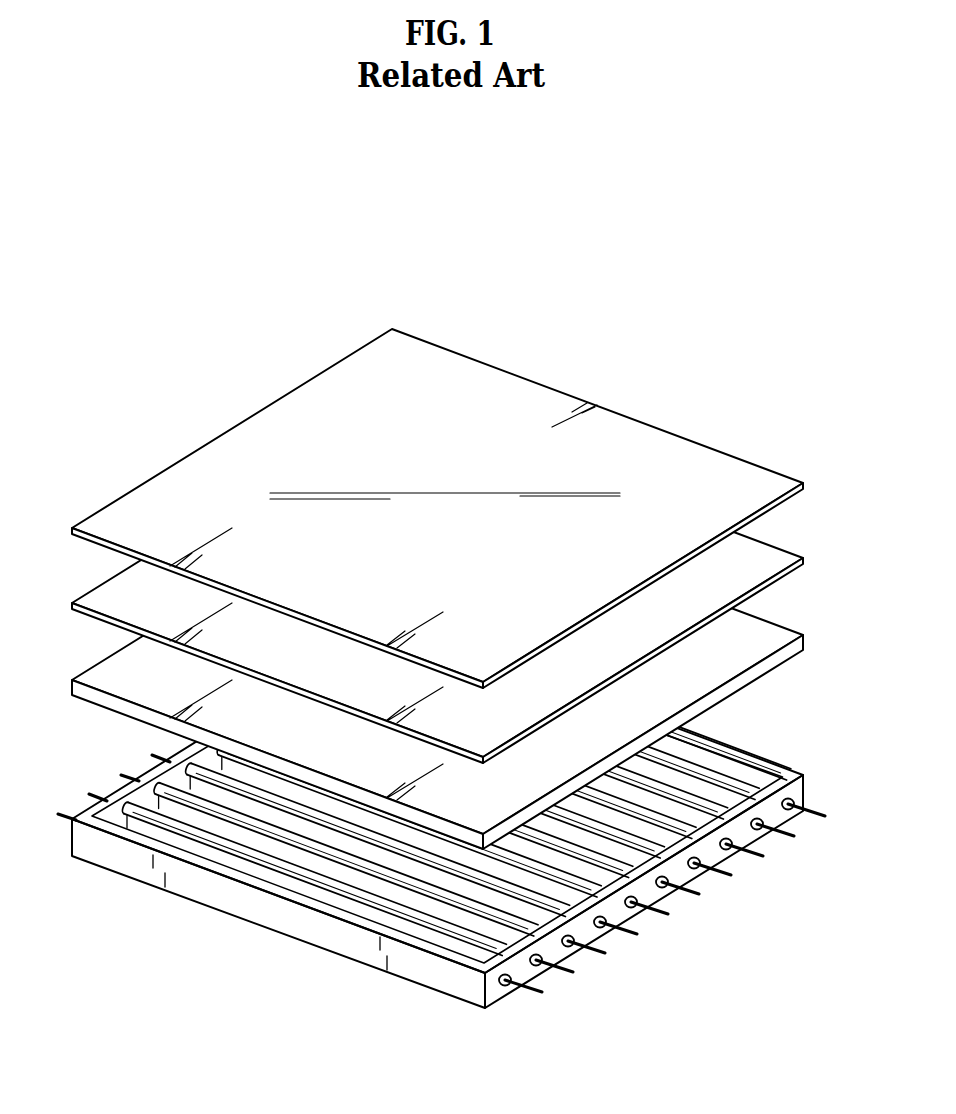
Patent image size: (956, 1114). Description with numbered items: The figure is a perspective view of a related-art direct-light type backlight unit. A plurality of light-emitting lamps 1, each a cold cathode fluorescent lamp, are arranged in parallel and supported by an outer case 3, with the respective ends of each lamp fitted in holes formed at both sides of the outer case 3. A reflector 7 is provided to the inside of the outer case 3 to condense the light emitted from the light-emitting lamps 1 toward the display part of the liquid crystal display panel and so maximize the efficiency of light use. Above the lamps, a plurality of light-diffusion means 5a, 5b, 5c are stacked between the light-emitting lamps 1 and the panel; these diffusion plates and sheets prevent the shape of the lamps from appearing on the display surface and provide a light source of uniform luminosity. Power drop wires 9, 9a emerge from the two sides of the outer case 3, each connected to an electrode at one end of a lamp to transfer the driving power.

The light-emitting lamp 1 is at (293, 867).
The outer case 3 is at (462, 988).
The light-diffusion means 5a is at (757, 628).
The light-diffusion means 5b is at (757, 552).
The light-diffusion means 5c is at (757, 474).
The reflector 7 is at (378, 893).
The power drop wire 9 is at (532, 995).
The power drop wire 9a is at (60, 817).